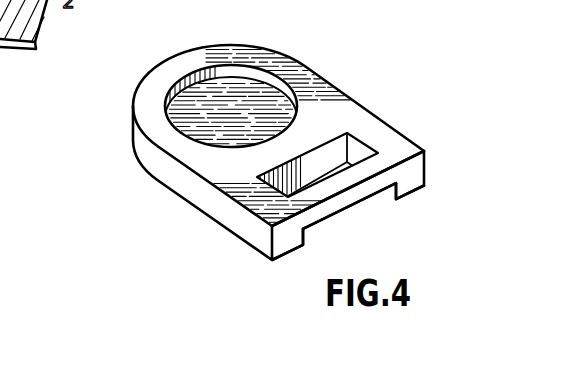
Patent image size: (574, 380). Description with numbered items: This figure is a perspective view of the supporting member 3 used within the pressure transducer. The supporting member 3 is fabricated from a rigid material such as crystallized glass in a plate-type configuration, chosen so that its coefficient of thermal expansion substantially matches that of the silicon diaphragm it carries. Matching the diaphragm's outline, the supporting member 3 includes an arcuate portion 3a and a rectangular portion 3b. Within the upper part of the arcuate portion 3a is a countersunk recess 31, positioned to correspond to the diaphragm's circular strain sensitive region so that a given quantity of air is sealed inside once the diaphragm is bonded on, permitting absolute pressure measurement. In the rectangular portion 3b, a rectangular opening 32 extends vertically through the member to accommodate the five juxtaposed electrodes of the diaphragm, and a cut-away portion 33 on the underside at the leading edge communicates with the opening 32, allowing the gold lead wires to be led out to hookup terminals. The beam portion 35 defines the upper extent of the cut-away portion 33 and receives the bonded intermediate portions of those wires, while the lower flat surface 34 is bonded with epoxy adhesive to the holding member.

The supporting member 3 is at (128, 112).
The arcuate portion 3a is at (277, 62).
The rectangular portion 3b is at (233, 190).
The countersunk recess 31 is at (224, 70).
The rectangular opening 32 is at (357, 150).
The cut-away portion 33 is at (393, 188).
The lower flat surface 34 is at (287, 259).
The beam portion 35 is at (338, 189).